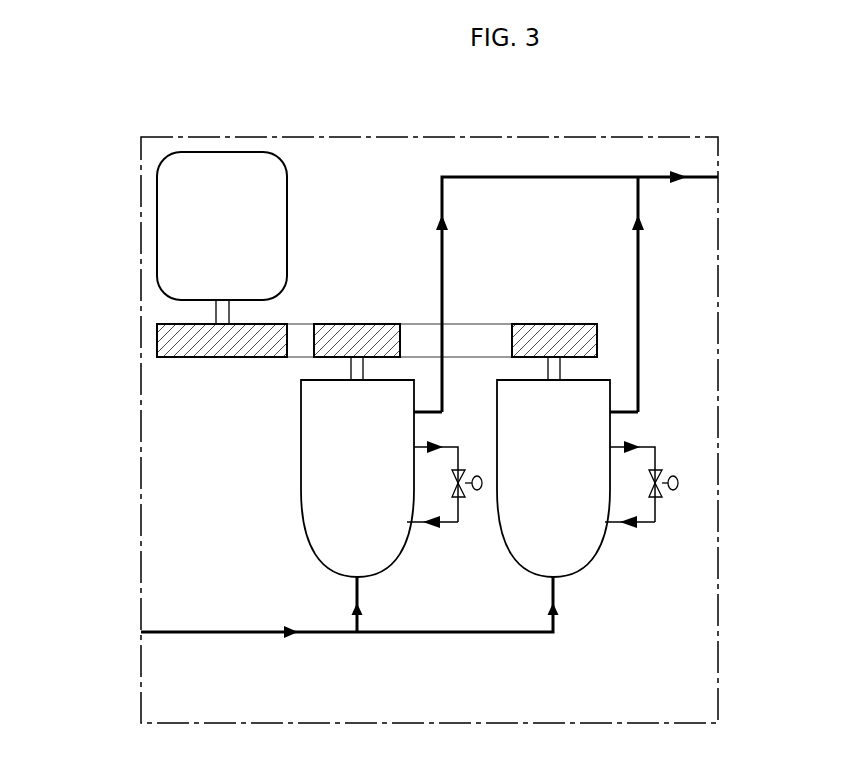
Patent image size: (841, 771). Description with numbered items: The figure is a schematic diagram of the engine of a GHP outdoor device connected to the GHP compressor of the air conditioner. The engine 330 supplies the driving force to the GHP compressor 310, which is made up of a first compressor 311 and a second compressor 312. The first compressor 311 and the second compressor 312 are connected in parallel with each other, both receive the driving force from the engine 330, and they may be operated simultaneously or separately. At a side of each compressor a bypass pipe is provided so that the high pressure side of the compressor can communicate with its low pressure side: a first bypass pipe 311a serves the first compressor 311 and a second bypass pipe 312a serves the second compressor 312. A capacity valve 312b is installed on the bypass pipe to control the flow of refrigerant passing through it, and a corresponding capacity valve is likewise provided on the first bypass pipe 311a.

The engine 330 is at (224, 151).
The GHP compressor 310 is at (68, 433).
The first compressor 311 is at (302, 506).
The second compressor 312 is at (497, 433).
The first bypass pipe 311a is at (412, 524).
The second bypass pipe 312a is at (655, 510).
The capacity valve 312b is at (472, 497).